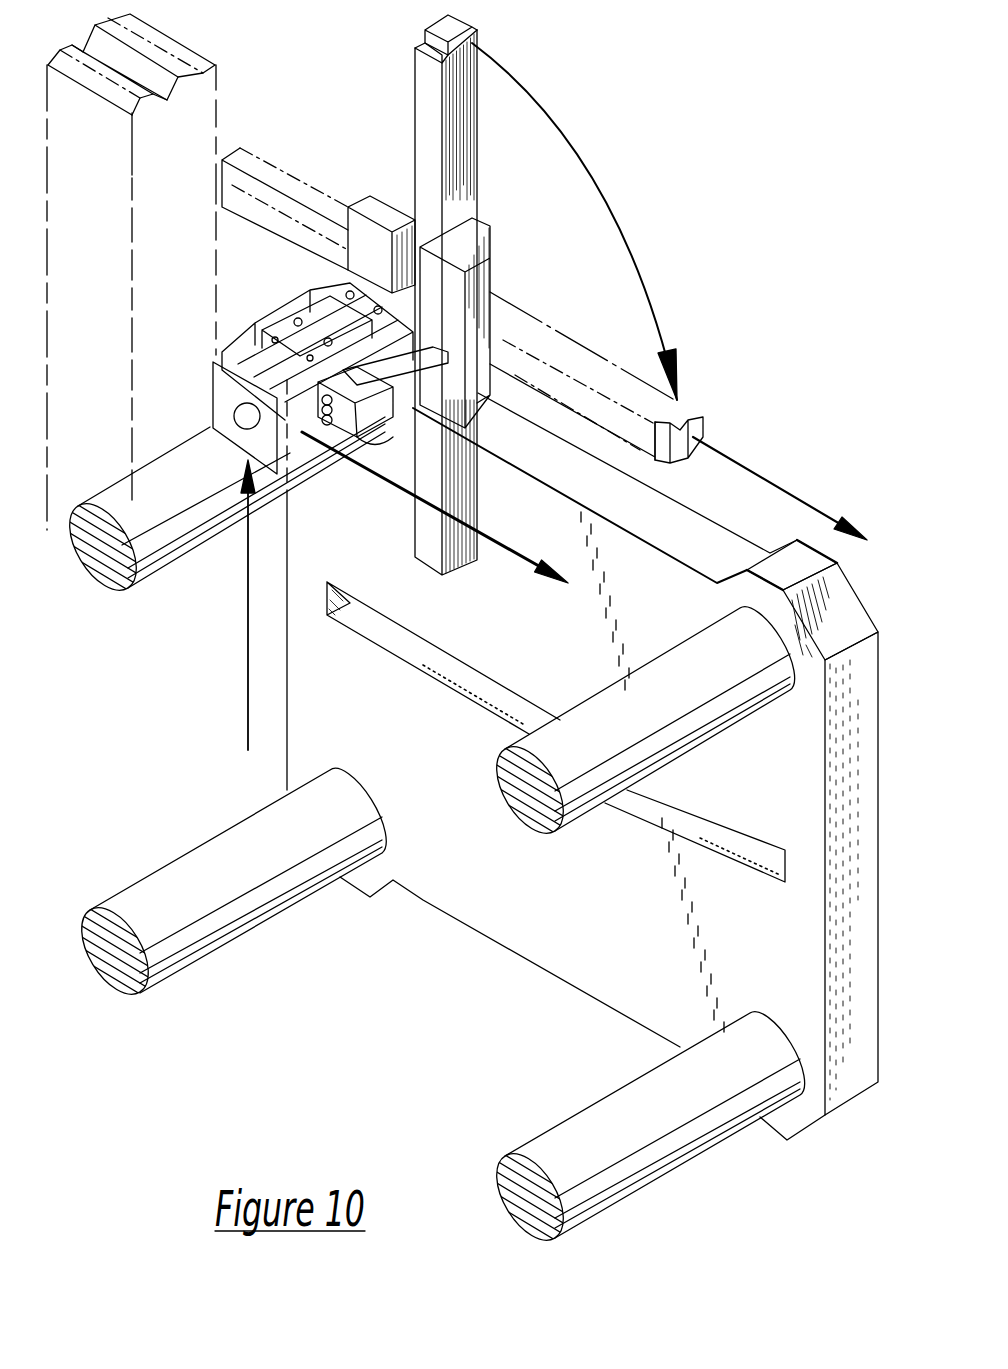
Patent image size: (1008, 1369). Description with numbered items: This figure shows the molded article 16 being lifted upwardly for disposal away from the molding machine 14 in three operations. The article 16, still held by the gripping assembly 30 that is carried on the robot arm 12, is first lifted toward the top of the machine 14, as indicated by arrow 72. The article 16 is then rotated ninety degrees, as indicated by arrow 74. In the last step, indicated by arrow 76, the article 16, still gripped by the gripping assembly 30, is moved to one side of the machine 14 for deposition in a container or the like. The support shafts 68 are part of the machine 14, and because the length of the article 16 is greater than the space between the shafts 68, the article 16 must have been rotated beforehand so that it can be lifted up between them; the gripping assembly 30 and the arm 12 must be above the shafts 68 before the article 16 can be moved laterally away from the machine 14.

The robot arm 12 is at (190, 115).
The molding machine 14 is at (529, 652).
The article 16 is at (467, 22).
The gripping assembly 30 is at (357, 472).
The support shafts 68 is at (636, 732).
The arrow 72 is at (248, 648).
The arrow 74 is at (625, 231).
The arrow 76 is at (790, 491).